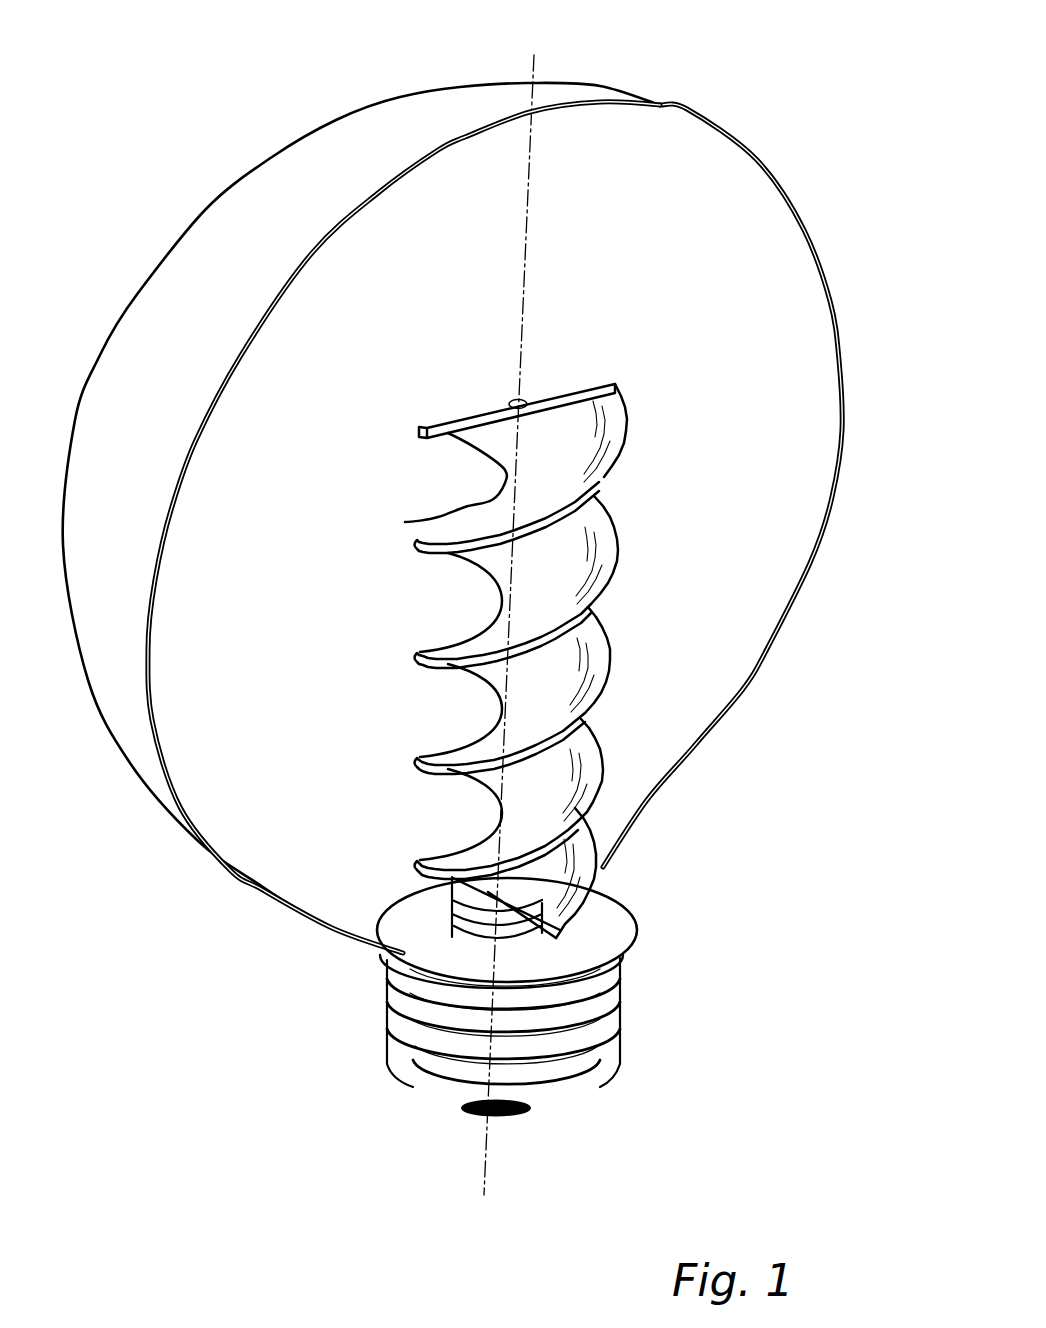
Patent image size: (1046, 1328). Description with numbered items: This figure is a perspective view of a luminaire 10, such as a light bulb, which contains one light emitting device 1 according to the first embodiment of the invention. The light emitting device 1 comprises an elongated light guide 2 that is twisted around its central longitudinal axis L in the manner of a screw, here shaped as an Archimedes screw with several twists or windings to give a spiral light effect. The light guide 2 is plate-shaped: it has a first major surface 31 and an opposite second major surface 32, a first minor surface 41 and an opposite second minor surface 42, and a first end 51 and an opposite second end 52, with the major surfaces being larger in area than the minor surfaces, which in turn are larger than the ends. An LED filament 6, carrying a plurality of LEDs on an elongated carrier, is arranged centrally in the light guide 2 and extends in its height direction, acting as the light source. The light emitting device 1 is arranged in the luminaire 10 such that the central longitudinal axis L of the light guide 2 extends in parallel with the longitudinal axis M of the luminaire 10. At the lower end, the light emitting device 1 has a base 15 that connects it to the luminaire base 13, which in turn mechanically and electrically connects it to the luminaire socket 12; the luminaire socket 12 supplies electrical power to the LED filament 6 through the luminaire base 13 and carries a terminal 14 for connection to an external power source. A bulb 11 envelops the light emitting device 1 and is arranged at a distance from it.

The luminaire 10 is at (465, 482).
The bulb 11 is at (800, 600).
The light emitting device 1 is at (527, 730).
The elongated light guide 2 is at (538, 730).
The first major surface 31 is at (555, 462).
The second major surface 32 is at (462, 553).
The first minor surface 41 is at (620, 478).
The second minor surface 42 is at (405, 522).
The first end 51 is at (565, 392).
The second end 52 is at (465, 868).
The LED filament 6 is at (517, 400).
The longitudinal axis of the luminaire M is at (533, 72).
The central longitudinal axis L is at (537, 700).
The base 15 is at (473, 933).
The luminaire base 13 is at (465, 938).
The luminaire socket 12 is at (450, 1058).
The terminal 14 is at (487, 1117).